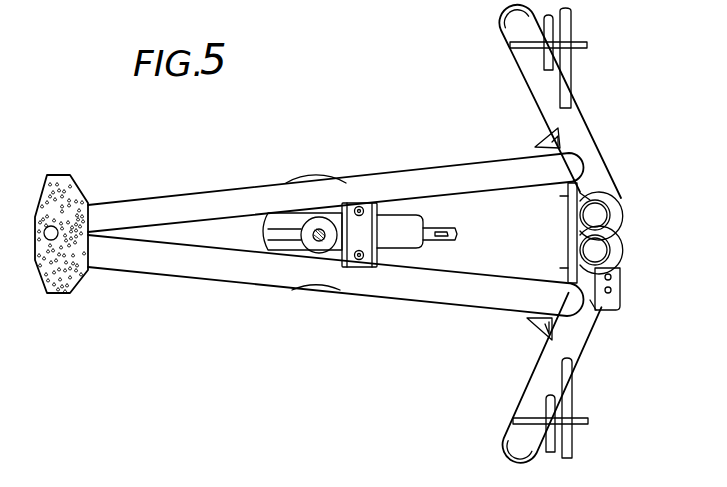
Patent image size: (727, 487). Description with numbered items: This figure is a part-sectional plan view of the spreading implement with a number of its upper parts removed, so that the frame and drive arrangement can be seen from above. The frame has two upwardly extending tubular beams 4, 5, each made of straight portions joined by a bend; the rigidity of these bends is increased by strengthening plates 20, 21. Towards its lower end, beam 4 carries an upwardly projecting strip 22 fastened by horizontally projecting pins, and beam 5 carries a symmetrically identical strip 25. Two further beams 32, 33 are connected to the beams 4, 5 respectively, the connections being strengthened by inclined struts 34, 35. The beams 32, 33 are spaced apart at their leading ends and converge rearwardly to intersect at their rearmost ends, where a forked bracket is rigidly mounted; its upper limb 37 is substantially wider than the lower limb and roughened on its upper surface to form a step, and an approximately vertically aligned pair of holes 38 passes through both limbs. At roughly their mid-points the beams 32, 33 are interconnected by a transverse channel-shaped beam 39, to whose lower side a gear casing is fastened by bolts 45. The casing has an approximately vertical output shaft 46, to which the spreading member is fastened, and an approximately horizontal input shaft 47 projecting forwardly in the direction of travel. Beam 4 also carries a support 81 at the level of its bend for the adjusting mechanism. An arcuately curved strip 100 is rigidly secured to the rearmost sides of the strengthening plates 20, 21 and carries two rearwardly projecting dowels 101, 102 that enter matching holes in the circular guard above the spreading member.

The tubular beam 4 is at (589, 356).
The tubular beam 5 is at (591, 111).
The strengthening plate 20 is at (593, 312).
The strengthening plate 21 is at (607, 173).
The upwardly projecting strip 22 is at (590, 423).
The strip 25 is at (587, 46).
The beam 32 is at (163, 275).
The beam 33 is at (202, 190).
The inclined strut 34 is at (537, 325).
The inclined strut 35 is at (538, 143).
The upper limb 37 is at (77, 193).
The pair of holes 38 is at (43, 238).
The transverse channel-shaped beam 39 is at (388, 263).
The bolts 45 is at (362, 207).
The output shaft 46 is at (318, 228).
The input shaft 47 is at (457, 234).
The support 81 is at (620, 298).
The arcuately curved strip 100 is at (577, 230).
The dowel 101 is at (560, 268).
The dowel 102 is at (560, 196).